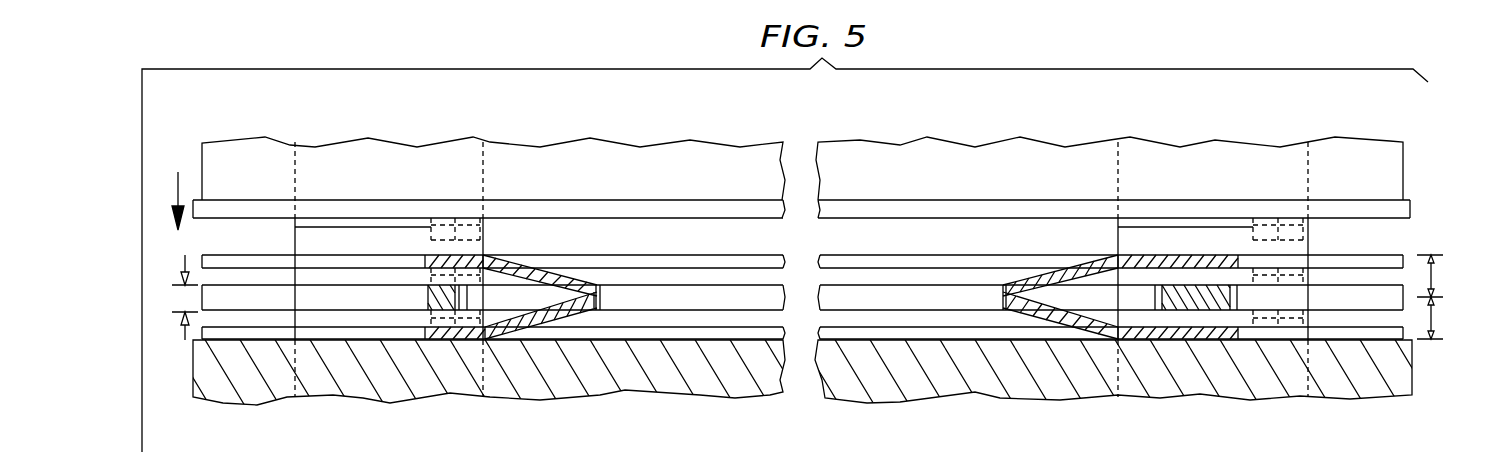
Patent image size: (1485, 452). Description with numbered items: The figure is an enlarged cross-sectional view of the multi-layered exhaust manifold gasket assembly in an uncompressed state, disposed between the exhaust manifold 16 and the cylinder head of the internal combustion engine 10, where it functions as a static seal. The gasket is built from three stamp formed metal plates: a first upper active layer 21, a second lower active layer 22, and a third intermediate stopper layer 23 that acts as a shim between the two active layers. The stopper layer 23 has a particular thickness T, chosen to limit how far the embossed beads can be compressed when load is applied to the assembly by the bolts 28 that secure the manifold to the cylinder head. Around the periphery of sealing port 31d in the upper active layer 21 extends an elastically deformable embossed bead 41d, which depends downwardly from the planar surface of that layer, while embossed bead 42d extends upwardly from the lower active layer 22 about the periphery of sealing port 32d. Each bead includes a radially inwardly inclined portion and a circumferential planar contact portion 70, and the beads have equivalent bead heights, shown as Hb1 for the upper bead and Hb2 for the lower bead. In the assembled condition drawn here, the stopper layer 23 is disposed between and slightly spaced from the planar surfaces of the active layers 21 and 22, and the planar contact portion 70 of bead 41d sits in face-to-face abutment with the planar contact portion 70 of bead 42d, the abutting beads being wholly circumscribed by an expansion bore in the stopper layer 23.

The internal combustion engine 10 is at (1073, 375).
The exhaust manifold 16 is at (1050, 167).
The first upper active layer 21 is at (342, 255).
The second lower active layer 22 is at (363, 333).
The third intermediate stopper layer 23 is at (310, 298).
The bolts 28 is at (383, 223).
The sealing port 31d is at (598, 290).
The sealing port 32d is at (598, 300).
The embossed bead 41d is at (565, 265).
The embossed bead 42d is at (580, 327).
The circumferential planar contact portion 70 is at (1010, 283).
The thickness T is at (177, 297).
The bead height Hb1 is at (1448, 276).
The bead height Hb2 is at (1448, 318).